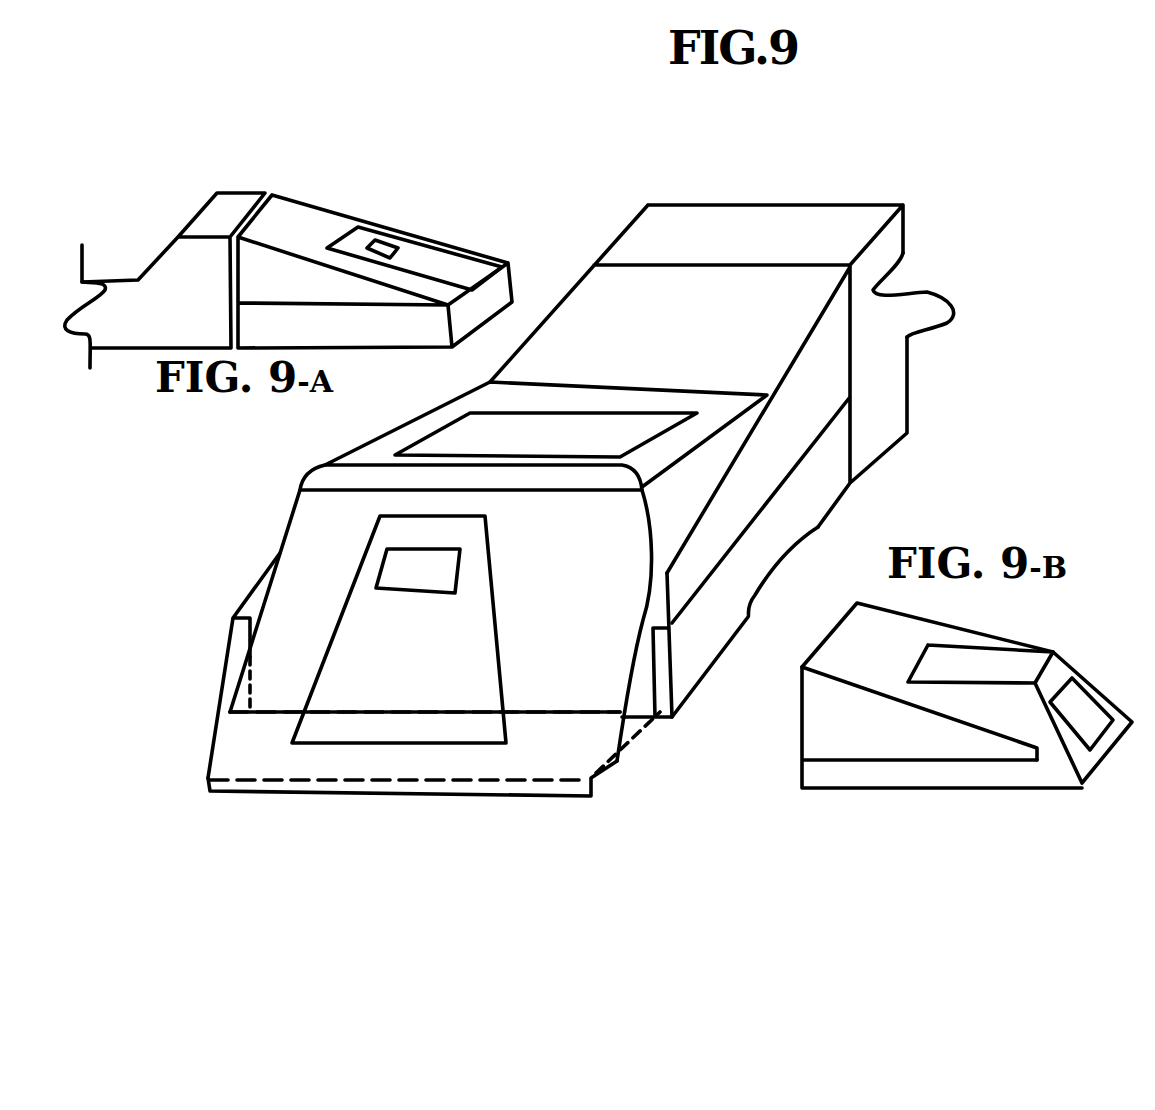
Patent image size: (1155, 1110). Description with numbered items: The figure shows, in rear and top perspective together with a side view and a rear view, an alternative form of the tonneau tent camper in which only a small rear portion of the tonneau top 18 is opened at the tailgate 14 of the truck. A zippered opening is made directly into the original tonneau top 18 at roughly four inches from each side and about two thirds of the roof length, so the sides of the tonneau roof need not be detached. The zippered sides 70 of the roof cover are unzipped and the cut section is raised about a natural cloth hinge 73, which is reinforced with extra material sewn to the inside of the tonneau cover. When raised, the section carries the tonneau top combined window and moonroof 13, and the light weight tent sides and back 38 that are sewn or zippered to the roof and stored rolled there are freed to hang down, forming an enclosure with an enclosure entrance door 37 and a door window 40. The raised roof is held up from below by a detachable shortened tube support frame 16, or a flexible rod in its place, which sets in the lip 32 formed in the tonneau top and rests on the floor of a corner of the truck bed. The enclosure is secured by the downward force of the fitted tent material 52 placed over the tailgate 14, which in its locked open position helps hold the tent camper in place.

In FIG. 9, the tonneau top combined window and moonroof 13 is at (572, 437).
In FIG. 9, the tailgate 14 is at (560, 717).
In FIG. 9-A, the tube support frame 16 is at (325, 207).
In FIG. 9-B, the tube support frame 16 is at (1037, 760).
In FIG. 9, the tonneau top 18 is at (827, 327).
In FIG. 9, the lip 32 is at (525, 490).
In FIG. 9, the enclosure entrance door 37 is at (460, 682).
In FIG. 9-B, the enclosure entrance door 37 is at (1110, 730).
In FIG. 9, the tent sides and back 38 is at (623, 457).
In FIG. 9-B, the tent sides and back 38 is at (885, 773).
In FIG. 9, the door window 40 is at (404, 579).
In FIG. 9, the fitted tent material 52 is at (619, 757).
In FIG. 9-B, the fitted tent material 52 is at (1082, 783).
In FIG. 9, the zippered sides of alternative tonneau roof 70 is at (737, 453).
In FIG. 9-A, the zippered sides of alternative tonneau roof 70 is at (417, 252).
In FIG. 9, the natural cloth hinge 73 is at (682, 387).
In FIG. 9-B, the natural cloth hinge 73 is at (908, 676).